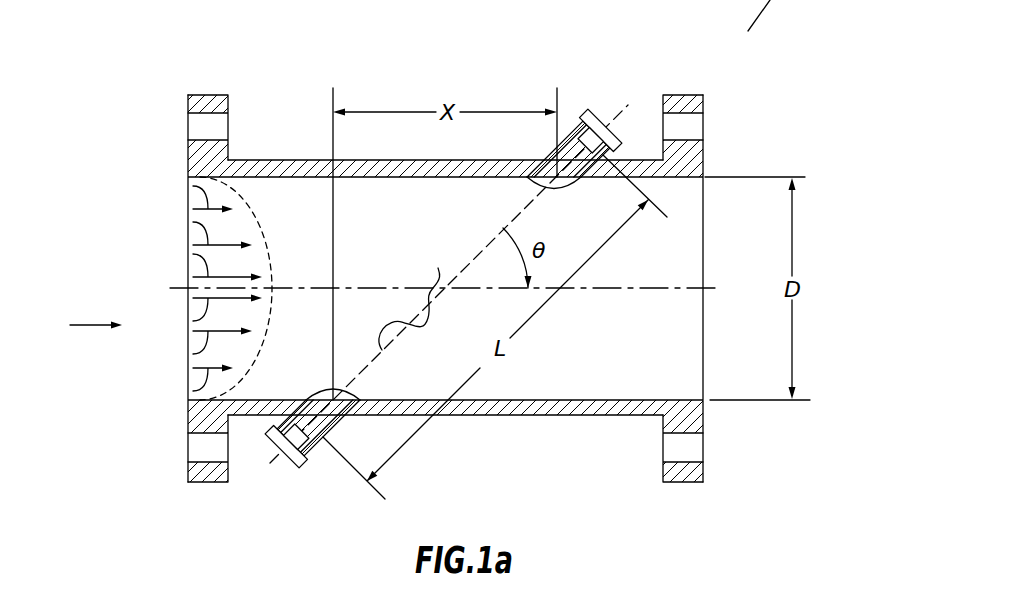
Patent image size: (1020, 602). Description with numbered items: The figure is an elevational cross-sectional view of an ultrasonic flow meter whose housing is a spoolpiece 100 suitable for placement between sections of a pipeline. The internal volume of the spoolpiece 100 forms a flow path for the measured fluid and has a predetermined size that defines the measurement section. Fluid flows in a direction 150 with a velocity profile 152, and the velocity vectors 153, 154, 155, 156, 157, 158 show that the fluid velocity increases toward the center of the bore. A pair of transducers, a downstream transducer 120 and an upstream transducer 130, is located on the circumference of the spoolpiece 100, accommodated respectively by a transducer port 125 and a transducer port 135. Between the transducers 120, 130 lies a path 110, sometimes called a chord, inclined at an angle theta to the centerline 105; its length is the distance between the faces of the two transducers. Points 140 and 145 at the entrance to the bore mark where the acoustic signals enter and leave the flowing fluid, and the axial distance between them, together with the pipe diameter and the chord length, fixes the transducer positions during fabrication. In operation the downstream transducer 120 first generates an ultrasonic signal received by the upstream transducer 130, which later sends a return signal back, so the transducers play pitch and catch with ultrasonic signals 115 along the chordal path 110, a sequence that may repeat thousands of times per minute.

The spoolpiece 100 is at (201, 93).
The centerline 105 is at (705, 288).
The path 110 is at (482, 250).
The ultrasonic signals 115 is at (418, 325).
The downstream transducer 120 is at (618, 111).
The transducer port 125 is at (582, 118).
The upstream transducer 130 is at (282, 463).
The transducer port 135 is at (323, 437).
The point 140 is at (553, 178).
The point 145 is at (334, 395).
The flow direction 150 is at (100, 328).
The velocity profile 152 is at (242, 208).
The velocity vector 153 is at (192, 190).
The velocity vector 154 is at (192, 233).
The velocity vector 155 is at (192, 270).
The velocity vector 156 is at (192, 313).
The velocity vector 157 is at (192, 353).
The velocity vector 158 is at (192, 390).